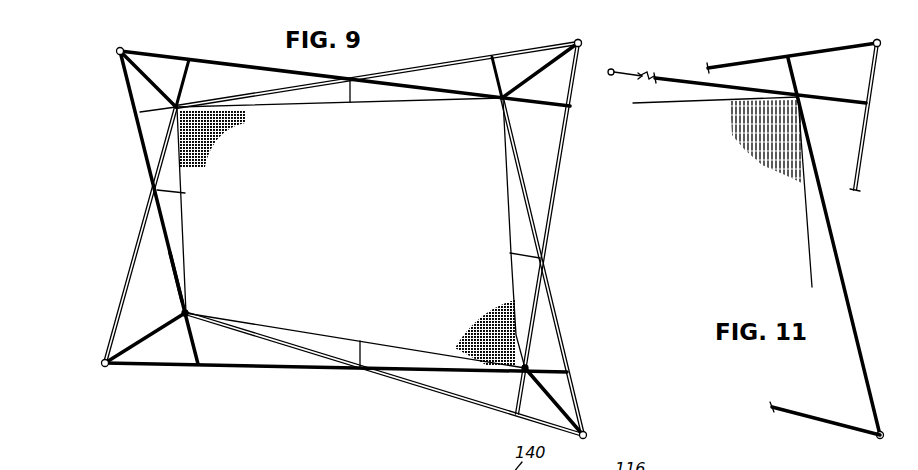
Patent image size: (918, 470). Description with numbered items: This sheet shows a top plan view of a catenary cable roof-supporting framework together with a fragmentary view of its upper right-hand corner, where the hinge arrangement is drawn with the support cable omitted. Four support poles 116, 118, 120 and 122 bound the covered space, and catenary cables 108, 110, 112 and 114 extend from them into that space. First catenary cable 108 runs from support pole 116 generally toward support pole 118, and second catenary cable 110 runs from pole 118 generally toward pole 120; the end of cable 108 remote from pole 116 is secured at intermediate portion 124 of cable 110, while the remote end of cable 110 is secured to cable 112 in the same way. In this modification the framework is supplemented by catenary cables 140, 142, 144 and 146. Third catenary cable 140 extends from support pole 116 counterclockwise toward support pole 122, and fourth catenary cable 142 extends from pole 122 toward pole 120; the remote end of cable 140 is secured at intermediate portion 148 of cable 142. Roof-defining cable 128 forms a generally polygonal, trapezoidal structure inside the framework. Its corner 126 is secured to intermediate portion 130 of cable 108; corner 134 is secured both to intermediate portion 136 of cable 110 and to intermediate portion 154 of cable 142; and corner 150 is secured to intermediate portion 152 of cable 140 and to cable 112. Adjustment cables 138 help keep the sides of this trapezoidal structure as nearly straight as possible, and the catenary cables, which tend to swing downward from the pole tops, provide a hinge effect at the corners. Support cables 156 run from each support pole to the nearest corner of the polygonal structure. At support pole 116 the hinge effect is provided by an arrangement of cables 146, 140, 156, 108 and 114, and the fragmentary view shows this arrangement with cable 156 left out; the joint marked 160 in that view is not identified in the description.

In FIG. 9, the first catenary cable 108 is at (555, 197).
In FIG. 11, the first catenary cable 108 is at (868, 104).
In FIG. 9, the second catenary cable 110 is at (437, 393).
In FIG. 9, the catenary cable 112 is at (143, 230).
In FIG. 9, the catenary cable 114 is at (222, 62).
In FIG. 11, the catenary cable 114 is at (838, 104).
In FIG. 9, the support pole 116 is at (582, 43).
In FIG. 11, the support pole 116 is at (873, 48).
In FIG. 9, the support pole 118 is at (586, 433).
In FIG. 9, the support pole 120 is at (101, 364).
In FIG. 9, the support pole 122 is at (116, 50).
In FIG. 9, the intermediate portion 124 is at (493, 0).
In FIG. 11, the intermediate portion 124 is at (823, 23).
In FIG. 9, the corner 126 is at (520, 365).
In FIG. 9, the roof-defining cable 128 is at (310, 108).
In FIG. 11, the roof-defining cable 128 is at (805, 192).
In FIG. 9, the intermediate portion 130 is at (530, 365).
In FIG. 9, the corner 134 is at (188, 311).
In FIG. 9, the intermediate portion 136 is at (175, 322).
In FIG. 9, the adjustment cables 138 is at (353, 99).
In FIG. 9, the third catenary cable 140 is at (423, 66).
In FIG. 11, the third catenary cable 140 is at (855, 22).
In FIG. 9, the fourth catenary cable 142 is at (140, 143).
In FIG. 9, the catenary cable 144 is at (263, 369).
In FIG. 9, the catenary cable 146 is at (553, 305).
In FIG. 11, the catenary cable 146 is at (765, 62).
In FIG. 9, the intermediate portion 148 is at (143, 102).
In FIG. 9, the corner 150 is at (182, 114).
In FIG. 9, the intermediate portion 152 is at (178, 86).
In FIG. 9, the intermediate portion 154 is at (175, 298).
In FIG. 9, the support cables 156 is at (147, 70).
In FIG. 11, the pivot joint 160 is at (819, 436).